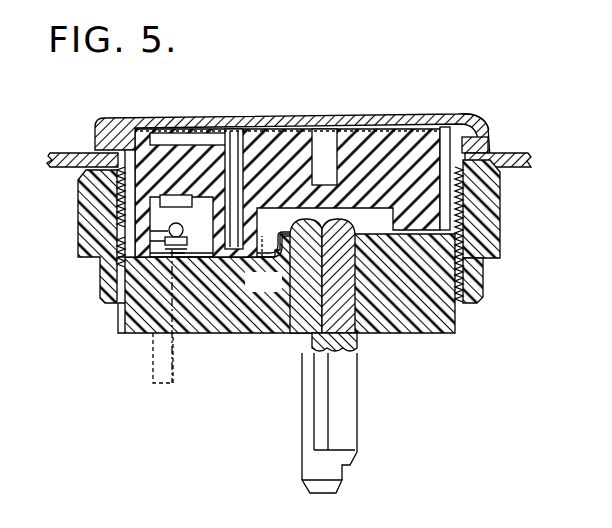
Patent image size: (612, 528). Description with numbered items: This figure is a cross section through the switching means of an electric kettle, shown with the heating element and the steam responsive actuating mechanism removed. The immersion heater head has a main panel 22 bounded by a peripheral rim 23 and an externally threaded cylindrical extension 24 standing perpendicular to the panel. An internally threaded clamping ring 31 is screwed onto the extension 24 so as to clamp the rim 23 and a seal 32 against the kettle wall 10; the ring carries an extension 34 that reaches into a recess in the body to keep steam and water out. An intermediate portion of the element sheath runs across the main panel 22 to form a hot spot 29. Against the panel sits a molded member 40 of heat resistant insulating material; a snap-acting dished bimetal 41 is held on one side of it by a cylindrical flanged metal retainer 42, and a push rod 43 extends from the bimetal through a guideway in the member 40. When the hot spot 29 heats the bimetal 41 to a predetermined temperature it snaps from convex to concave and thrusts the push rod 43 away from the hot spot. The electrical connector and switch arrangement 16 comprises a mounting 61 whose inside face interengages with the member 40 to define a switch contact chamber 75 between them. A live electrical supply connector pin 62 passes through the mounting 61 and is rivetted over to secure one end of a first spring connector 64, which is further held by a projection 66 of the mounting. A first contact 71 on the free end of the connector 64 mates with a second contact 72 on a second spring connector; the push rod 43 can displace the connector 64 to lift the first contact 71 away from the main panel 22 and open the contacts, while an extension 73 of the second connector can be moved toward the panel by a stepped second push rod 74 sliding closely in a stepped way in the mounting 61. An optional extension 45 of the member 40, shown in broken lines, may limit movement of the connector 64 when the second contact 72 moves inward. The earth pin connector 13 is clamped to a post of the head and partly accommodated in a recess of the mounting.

The wall 10 is at (528, 163).
The earth pin connector 13 is at (330, 488).
The electrical connector and switch arrangement 16 is at (373, 150).
The main panel 22 is at (170, 117).
The peripheral rim 23 is at (470, 120).
The externally threaded cylindrical extension 24 is at (468, 190).
The hot spot 29 is at (236, 128).
The clamping ring 31 is at (490, 236).
The seal 32 is at (488, 147).
The extension 34 is at (470, 297).
The molded member 40 is at (296, 165).
The bimetal 41 is at (206, 131).
The cylindrical flanged metal retainer 42 is at (328, 128).
The push rod 43 is at (248, 125).
The extension of the molded member 45 is at (207, 263).
The mounting 61 is at (428, 335).
The live electrical supply connector pin 62 is at (345, 432).
The first spring connector 64 is at (250, 255).
The projection 66 is at (286, 333).
The first contact 71 is at (150, 245).
The second contact 72 is at (163, 232).
The extension 73 is at (133, 316).
The second push rod 74 is at (162, 360).
The switch contact chamber 75 is at (191, 316).